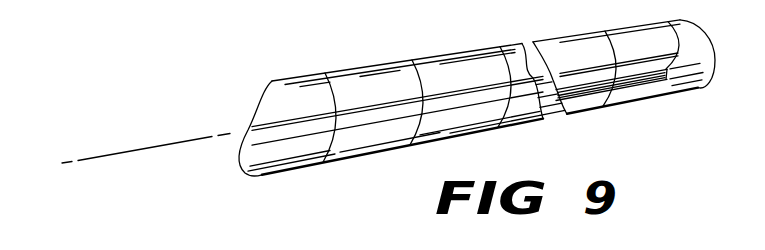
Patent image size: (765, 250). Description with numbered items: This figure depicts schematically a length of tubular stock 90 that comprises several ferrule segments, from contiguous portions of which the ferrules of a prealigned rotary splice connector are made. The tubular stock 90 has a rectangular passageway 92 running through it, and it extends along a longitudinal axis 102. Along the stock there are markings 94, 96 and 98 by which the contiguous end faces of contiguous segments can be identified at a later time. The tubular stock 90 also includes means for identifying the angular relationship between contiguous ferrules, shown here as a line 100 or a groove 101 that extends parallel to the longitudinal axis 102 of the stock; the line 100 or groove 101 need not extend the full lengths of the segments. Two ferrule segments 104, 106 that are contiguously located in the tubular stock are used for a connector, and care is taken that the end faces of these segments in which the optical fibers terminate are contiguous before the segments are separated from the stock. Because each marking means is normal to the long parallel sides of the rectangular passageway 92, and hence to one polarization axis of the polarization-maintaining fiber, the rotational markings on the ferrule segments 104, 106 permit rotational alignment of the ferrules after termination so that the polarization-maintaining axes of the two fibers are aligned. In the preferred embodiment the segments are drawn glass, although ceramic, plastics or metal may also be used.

The tubular stock 90 is at (433, 67).
The rectangular passageway 92 is at (257, 132).
The marking 94 is at (410, 70).
The marking 96 is at (503, 63).
The marking 98 is at (600, 32).
The line 100 is at (543, 123).
The groove 101 is at (588, 117).
The longitudinal axis 102 is at (130, 147).
The ferrule segment 104 is at (337, 71).
The ferrule segment 106 is at (442, 144).